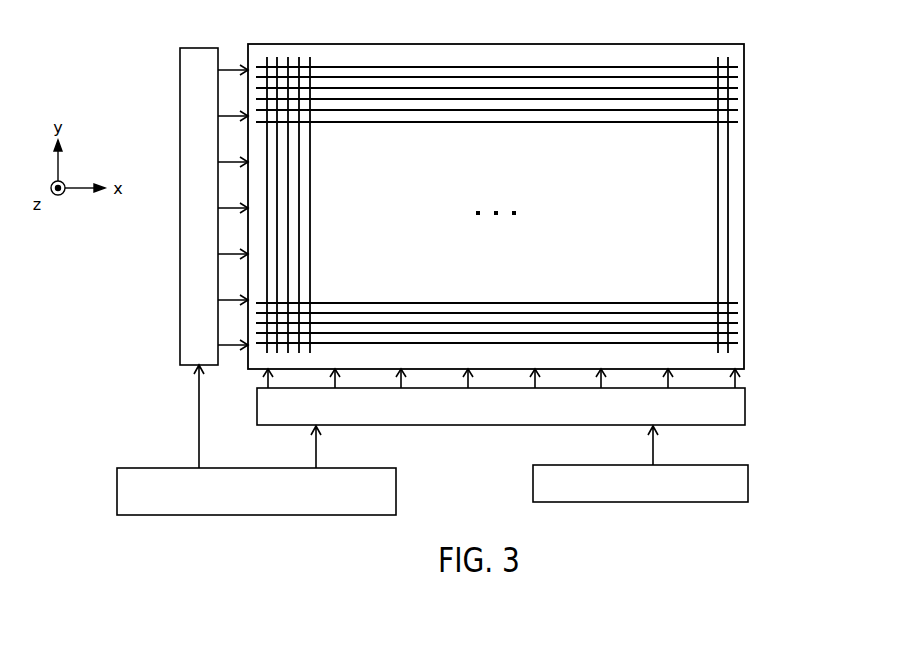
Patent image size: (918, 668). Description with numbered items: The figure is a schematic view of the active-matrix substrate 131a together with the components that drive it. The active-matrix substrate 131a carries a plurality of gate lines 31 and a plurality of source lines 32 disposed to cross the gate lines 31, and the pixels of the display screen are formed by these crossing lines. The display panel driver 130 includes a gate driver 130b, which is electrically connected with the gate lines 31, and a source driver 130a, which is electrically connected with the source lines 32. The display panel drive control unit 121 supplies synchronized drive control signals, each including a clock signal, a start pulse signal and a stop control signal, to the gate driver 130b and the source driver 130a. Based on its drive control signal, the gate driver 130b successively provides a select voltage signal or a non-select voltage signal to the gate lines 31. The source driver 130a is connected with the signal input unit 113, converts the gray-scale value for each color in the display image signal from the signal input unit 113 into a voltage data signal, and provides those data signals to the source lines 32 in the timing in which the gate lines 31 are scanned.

The gate lines 31 is at (643, 63).
The source lines 32 is at (267, 58).
The active-matrix substrate 131a is at (745, 43).
The display panel driver 130 is at (403, 236).
The source driver 130a is at (257, 405).
The gate driver 130b is at (180, 369).
The display panel drive control unit 121 is at (396, 468).
The signal input unit 113 is at (748, 465).